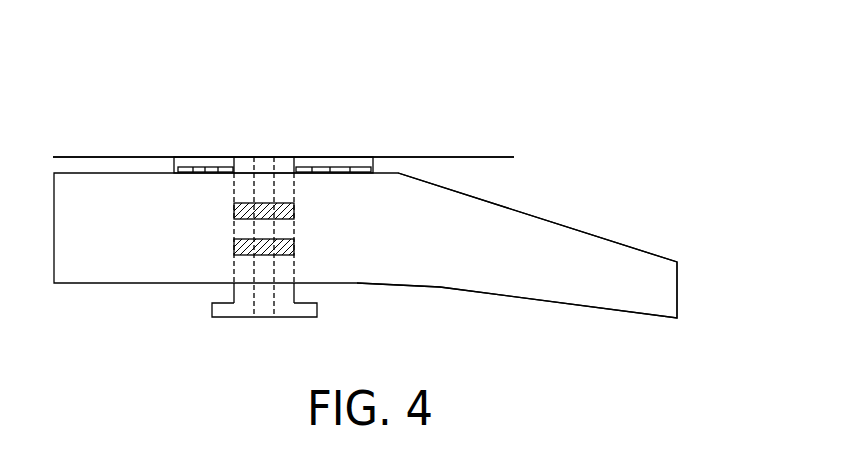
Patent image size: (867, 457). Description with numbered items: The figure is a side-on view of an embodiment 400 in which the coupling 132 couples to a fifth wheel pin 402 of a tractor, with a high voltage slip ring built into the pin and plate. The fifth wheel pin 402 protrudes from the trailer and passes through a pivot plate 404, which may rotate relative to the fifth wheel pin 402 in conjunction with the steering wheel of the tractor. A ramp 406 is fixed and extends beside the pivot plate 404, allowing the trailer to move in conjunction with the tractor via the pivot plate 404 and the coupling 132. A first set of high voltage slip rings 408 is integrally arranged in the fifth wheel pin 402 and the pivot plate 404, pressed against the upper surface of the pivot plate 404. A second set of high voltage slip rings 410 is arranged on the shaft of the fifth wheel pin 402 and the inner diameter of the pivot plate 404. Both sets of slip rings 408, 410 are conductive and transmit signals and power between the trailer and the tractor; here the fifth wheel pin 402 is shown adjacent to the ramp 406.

The embodiment 400 is at (612, 77).
The coupling 132 is at (345, 107).
The fifth wheel pin 402 is at (240, 317).
The pivot plate 404 is at (115, 283).
The ramp 406 is at (595, 236).
The first set of high voltage slip rings 408 is at (210, 157).
The second set of high voltage slip rings 410 is at (287, 210).